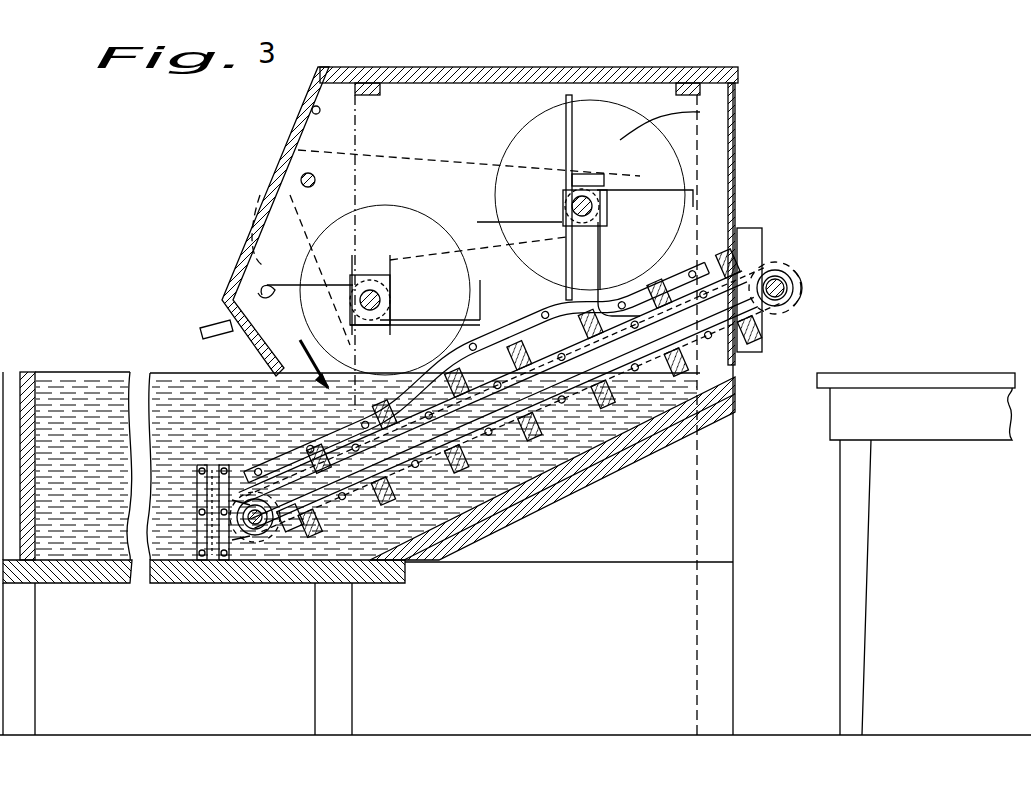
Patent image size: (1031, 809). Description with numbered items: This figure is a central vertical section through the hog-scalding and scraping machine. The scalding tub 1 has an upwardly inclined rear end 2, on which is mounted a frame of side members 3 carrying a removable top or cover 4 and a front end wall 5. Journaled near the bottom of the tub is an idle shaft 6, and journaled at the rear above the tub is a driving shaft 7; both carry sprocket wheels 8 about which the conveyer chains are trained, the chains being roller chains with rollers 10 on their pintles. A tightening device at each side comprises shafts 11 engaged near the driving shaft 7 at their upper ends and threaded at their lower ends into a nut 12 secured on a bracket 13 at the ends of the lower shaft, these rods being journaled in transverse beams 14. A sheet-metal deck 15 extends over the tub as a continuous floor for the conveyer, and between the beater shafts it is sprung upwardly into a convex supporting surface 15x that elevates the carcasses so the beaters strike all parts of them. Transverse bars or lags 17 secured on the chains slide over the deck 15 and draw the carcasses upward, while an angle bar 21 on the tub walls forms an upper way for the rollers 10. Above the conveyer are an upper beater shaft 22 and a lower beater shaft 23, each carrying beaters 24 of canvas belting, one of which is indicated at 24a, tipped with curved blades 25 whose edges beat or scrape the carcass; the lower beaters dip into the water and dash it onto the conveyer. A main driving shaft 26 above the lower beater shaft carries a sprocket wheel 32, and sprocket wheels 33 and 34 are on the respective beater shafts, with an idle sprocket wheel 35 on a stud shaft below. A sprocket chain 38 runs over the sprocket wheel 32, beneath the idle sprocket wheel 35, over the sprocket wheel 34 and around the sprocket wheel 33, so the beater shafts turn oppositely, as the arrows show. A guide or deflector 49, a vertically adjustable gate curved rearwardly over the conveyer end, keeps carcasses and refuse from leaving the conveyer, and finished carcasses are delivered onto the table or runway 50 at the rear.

The scalding tub 1 is at (100, 525).
The upwardly inclined rear end 2 is at (700, 412).
The side members 3 is at (722, 112).
The removable top or cover 4 is at (605, 72).
The front end wall 5 is at (262, 232).
The idle shaft 6 is at (737, 165).
The driving shaft 7 is at (788, 288).
The sprocket wheels 8 is at (773, 275).
The rollers 10 is at (803, 293).
The tightening shafts 11 is at (600, 374).
The nut 12 is at (290, 522).
The bracket 13 is at (296, 516).
The transverse beams 14 is at (525, 472).
The deck 15 is at (273, 440).
The raised convex supporting surface of the deck 15x is at (472, 362).
The transverse bars or lags 17 is at (742, 268).
The angle bar 21 is at (267, 462).
The upper beater shaft 22 is at (565, 200).
The lower beater shaft 23 is at (371, 290).
The beaters 24 is at (262, 258).
The chain 24a is at (713, 128).
The curved blades 25 is at (575, 95).
The main driving shaft 26 is at (440, 153).
The sprocket wheel 32 is at (300, 180).
The sprocket wheel 33 is at (590, 185).
The sprocket wheel 34 is at (410, 290).
The idle sprocket wheel 35 is at (345, 412).
The sprocket chain 38 is at (312, 111).
The guide or deflector 49 is at (212, 562).
The table or runway 50 is at (905, 352).